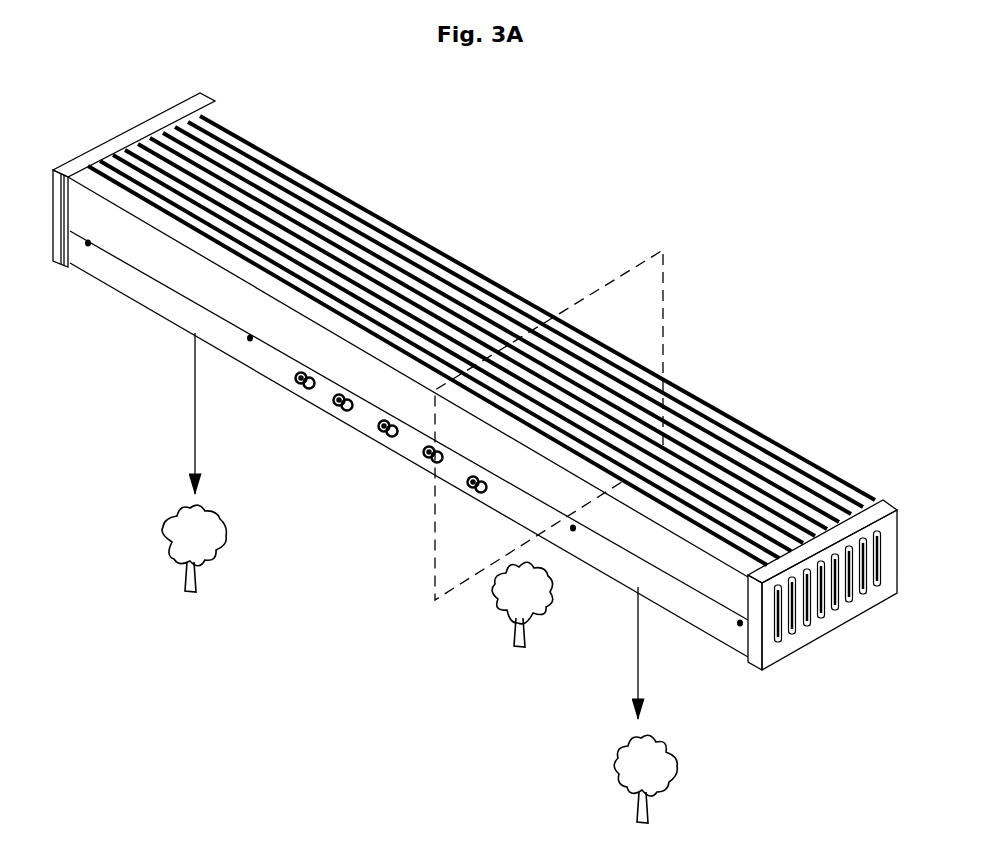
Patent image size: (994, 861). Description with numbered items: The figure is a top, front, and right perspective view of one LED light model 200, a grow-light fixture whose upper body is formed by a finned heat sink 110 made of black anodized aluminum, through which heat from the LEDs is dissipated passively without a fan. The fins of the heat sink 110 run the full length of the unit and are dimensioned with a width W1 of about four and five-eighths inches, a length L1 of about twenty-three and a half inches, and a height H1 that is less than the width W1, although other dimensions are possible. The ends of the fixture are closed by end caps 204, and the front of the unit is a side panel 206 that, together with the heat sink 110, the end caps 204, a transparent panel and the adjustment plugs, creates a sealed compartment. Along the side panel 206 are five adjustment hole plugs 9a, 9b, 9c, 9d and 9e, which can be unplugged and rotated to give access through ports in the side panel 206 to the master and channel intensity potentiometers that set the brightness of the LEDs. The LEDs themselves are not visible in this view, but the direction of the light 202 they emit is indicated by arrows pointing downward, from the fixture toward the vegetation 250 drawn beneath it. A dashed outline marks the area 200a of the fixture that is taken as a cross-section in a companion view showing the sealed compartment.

The LED light model 200 is at (622, 163).
The cross-section area 200a is at (670, 281).
The heat sink 110 is at (290, 175).
The end caps 204 is at (58, 256).
The side panel 206 is at (180, 298).
The direction of light 202 is at (195, 440).
The adjustment hole plug 9a is at (296, 381).
The adjustment hole plug 9b is at (335, 410).
The adjustment hole plug 9c is at (380, 438).
The adjustment hole plug 9d is at (425, 463).
The adjustment hole plug 9e is at (468, 490).
The vegetation 250 is at (522, 577).
The length L1 is at (925, 483).
The width W1 is at (198, 95).
The height H1 is at (13, 149).